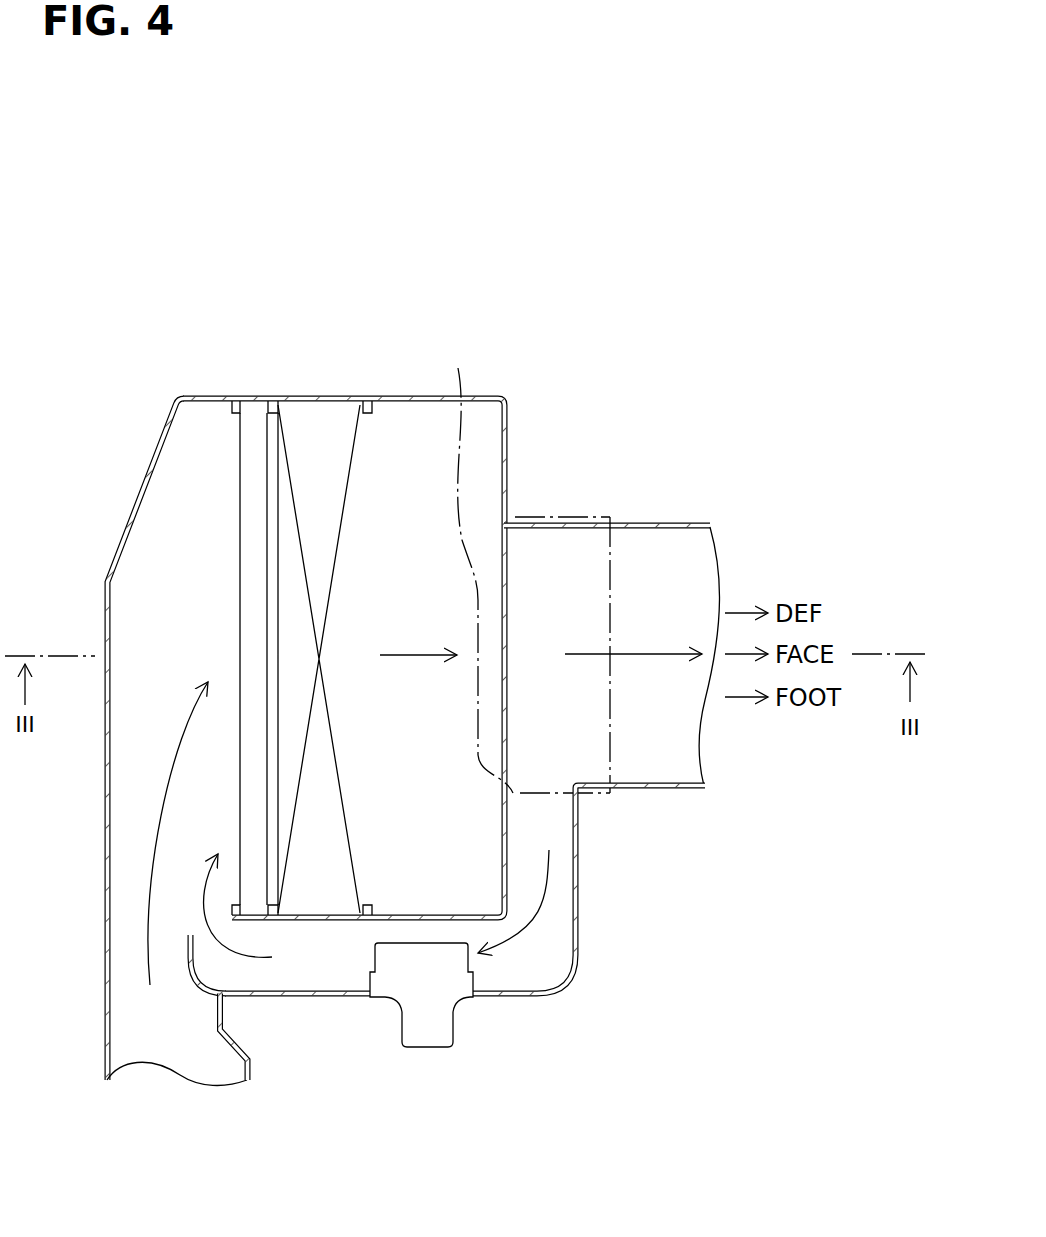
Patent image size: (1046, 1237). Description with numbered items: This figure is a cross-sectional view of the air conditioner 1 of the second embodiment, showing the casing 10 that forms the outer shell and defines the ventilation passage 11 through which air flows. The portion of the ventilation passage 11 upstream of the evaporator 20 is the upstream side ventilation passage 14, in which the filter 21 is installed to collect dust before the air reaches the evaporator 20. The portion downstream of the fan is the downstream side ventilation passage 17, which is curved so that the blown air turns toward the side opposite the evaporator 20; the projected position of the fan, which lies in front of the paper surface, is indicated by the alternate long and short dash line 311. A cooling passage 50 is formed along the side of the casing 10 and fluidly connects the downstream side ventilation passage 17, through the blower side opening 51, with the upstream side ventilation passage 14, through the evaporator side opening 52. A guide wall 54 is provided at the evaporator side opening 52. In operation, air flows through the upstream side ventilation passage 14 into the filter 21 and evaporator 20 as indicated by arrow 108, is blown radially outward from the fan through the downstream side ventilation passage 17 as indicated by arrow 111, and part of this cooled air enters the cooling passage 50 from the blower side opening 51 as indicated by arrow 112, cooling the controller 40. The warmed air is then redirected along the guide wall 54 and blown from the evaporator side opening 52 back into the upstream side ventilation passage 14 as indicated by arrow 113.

The air conditioner 1 is at (434, 279).
The casing 10 is at (133, 516).
The ventilation passage 11 is at (362, 740).
The upstream side ventilation passage 14 is at (152, 622).
The downstream side ventilation passage 17 is at (657, 562).
The evaporator 20 is at (317, 462).
The filter 21 is at (254, 466).
The controller 40 is at (430, 1032).
The cooling passage 50 is at (322, 976).
The blower side opening 51 is at (572, 784).
The evaporator side opening 52 is at (187, 936).
The guide wall 54 is at (168, 1000).
The arrow 108 is at (165, 760).
The arrow 111 is at (588, 654).
The arrow 112 is at (540, 927).
The arrow 113 is at (254, 958).
The alternate long and short dash line 311 is at (469, 566).